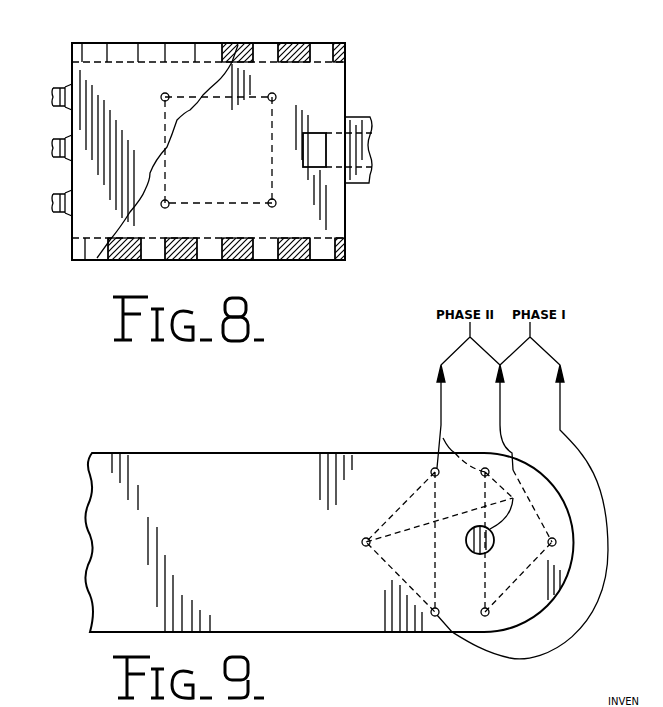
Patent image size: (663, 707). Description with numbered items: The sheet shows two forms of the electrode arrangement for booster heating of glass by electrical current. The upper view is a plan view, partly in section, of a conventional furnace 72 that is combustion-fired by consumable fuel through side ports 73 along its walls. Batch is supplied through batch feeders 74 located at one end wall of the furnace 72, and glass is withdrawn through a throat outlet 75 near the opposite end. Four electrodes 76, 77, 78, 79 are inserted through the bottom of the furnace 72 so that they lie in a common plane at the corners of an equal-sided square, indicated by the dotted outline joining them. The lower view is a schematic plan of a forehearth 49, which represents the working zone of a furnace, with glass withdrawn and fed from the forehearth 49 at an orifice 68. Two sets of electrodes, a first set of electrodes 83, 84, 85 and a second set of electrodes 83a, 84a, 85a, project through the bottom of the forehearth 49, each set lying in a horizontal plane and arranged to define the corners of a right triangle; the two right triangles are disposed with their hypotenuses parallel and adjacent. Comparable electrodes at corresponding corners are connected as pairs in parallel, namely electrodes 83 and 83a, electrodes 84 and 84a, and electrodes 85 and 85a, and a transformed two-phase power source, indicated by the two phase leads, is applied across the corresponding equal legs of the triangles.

In FIG. 8, the conventional furnace 72 is at (302, 48).
In FIG. 8, the side ports 73 is at (263, 46).
In FIG. 8, the batch feeders 74 is at (56, 90).
In FIG. 8, the throat outlet 75 is at (316, 133).
In FIG. 8, the electrode 76 is at (160, 97).
In FIG. 8, the electrode 77 is at (276, 95).
In FIG. 8, the electrode 78 is at (275, 207).
In FIG. 8, the electrode 79 is at (163, 208).
In FIG. 9, the forehearth 49 is at (253, 453).
In FIG. 9, the orifice 68 is at (494, 530).
In FIG. 9, the electrode 83 is at (489, 470).
In FIG. 9, the electrode 83a is at (431, 472).
In FIG. 9, the electrode 84 is at (556, 541).
In FIG. 9, the electrode 84a is at (363, 545).
In FIG. 9, the electrode 85 is at (489, 612).
In FIG. 9, the electrode 85a is at (436, 616).